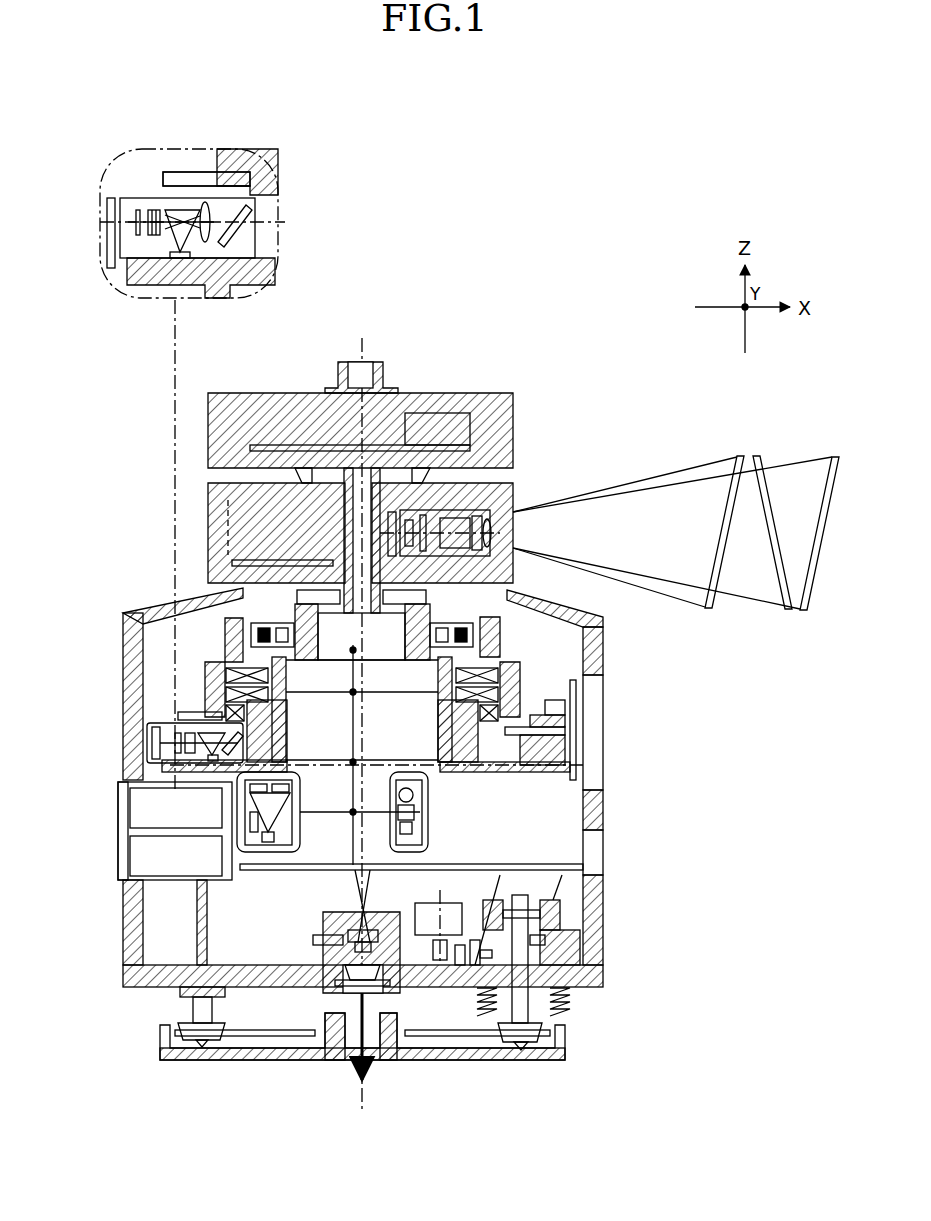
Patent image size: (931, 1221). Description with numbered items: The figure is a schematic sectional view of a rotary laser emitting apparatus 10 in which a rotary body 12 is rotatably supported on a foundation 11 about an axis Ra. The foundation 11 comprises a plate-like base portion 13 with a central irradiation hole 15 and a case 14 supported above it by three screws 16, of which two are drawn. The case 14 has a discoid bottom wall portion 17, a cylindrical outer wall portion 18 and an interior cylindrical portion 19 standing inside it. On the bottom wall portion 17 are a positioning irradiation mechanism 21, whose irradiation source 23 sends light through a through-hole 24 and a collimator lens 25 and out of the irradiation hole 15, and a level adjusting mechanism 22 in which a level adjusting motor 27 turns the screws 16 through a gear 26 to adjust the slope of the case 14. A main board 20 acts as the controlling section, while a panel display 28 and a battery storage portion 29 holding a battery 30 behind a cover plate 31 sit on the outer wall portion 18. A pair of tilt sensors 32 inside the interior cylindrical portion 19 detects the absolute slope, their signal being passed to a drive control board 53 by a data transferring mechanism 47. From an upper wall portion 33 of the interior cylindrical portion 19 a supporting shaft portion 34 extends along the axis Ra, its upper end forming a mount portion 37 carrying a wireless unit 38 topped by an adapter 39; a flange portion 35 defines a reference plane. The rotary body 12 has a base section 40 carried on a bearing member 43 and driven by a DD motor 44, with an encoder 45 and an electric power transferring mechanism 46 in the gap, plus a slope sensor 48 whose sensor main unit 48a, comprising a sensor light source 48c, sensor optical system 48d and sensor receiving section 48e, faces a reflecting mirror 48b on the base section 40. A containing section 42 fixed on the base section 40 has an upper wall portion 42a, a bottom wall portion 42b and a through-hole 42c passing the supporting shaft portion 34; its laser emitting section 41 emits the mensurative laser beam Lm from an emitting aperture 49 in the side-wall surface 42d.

The rotary laser emitting apparatus 10 is at (560, 313).
The foundation 11 is at (652, 792).
The rotary body 12 is at (610, 475).
The base portion 13 is at (152, 1050).
The case 14 is at (102, 692).
The irradiation hole 15 is at (372, 1060).
The screws 16 is at (192, 1010).
The bottom wall portion 17 is at (123, 978).
The outer wall portion 18 is at (131, 935).
The interior cylindrical portion 19 is at (196, 948).
The main board 20 is at (470, 864).
The positioning irradiation mechanism 21 is at (320, 916).
The level adjusting mechanism 22 is at (572, 872).
The irradiation source 23 is at (362, 930).
The through-hole 24 is at (330, 938).
The collimator lens 25 is at (345, 967).
The gear 26 is at (445, 965).
The level adjusting motor 27 is at (458, 903).
The panel display 28 is at (590, 752).
The battery storage portion 29 is at (140, 829).
The battery 30 is at (142, 800).
The cover plate 31 is at (120, 836).
The tilt sensors 32 is at (388, 792).
The upper wall portion 33 is at (405, 626).
The supporting shaft portion 34 is at (345, 516).
The flange portion 35 is at (155, 278).
The mount portion 37 is at (340, 470).
The wireless unit 38 is at (505, 393).
The adapter 39 is at (385, 384).
The base section 40 is at (253, 150).
The laser emitting section 41 is at (518, 498).
The containing section 42 is at (405, 488).
The upper wall portion 42a is at (517, 450).
The bottom wall portion 42b is at (322, 578).
The through-hole 42c is at (367, 483).
The side-wall surface 42d is at (516, 510).
The bearing member 43 is at (520, 608).
The DD motor 44 is at (345, 676).
The encoder 45 is at (556, 700).
The electric power transferring mechanism 46 is at (530, 654).
The data transferring mechanism 47 is at (438, 660).
The slope sensor 48 is at (160, 409).
The sensor main unit 48a is at (161, 173).
The reflecting mirror 48b is at (207, 172).
The sensor light source 48c is at (128, 222).
The sensor optical system 48d is at (150, 212).
The sensor receiving section 48e is at (172, 245).
The emitting aperture 49 is at (505, 522).
The drive control board 53 is at (258, 572).
The axis Ra is at (362, 352).
The mensurative laser beam Lm is at (772, 455).